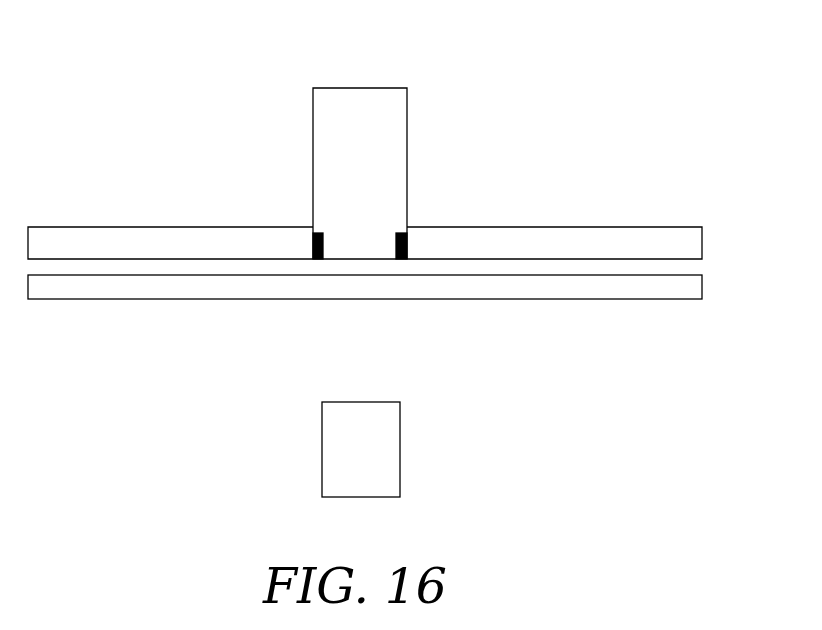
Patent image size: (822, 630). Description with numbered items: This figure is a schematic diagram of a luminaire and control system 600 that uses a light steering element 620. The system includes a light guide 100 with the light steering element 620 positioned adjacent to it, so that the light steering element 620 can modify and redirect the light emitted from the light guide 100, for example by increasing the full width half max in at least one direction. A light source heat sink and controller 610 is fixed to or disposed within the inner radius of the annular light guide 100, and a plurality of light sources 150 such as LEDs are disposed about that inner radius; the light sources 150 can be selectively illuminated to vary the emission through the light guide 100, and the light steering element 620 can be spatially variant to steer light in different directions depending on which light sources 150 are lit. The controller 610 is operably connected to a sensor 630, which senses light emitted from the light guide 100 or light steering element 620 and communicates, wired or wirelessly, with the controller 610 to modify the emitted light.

The luminaire and control system 600 is at (568, 97).
The heat sink and controller 610 is at (354, 101).
The light guide 100 is at (687, 241).
The light sources 150 is at (323, 242).
The light steering element 620 is at (687, 285).
The sensor 630 is at (377, 447).